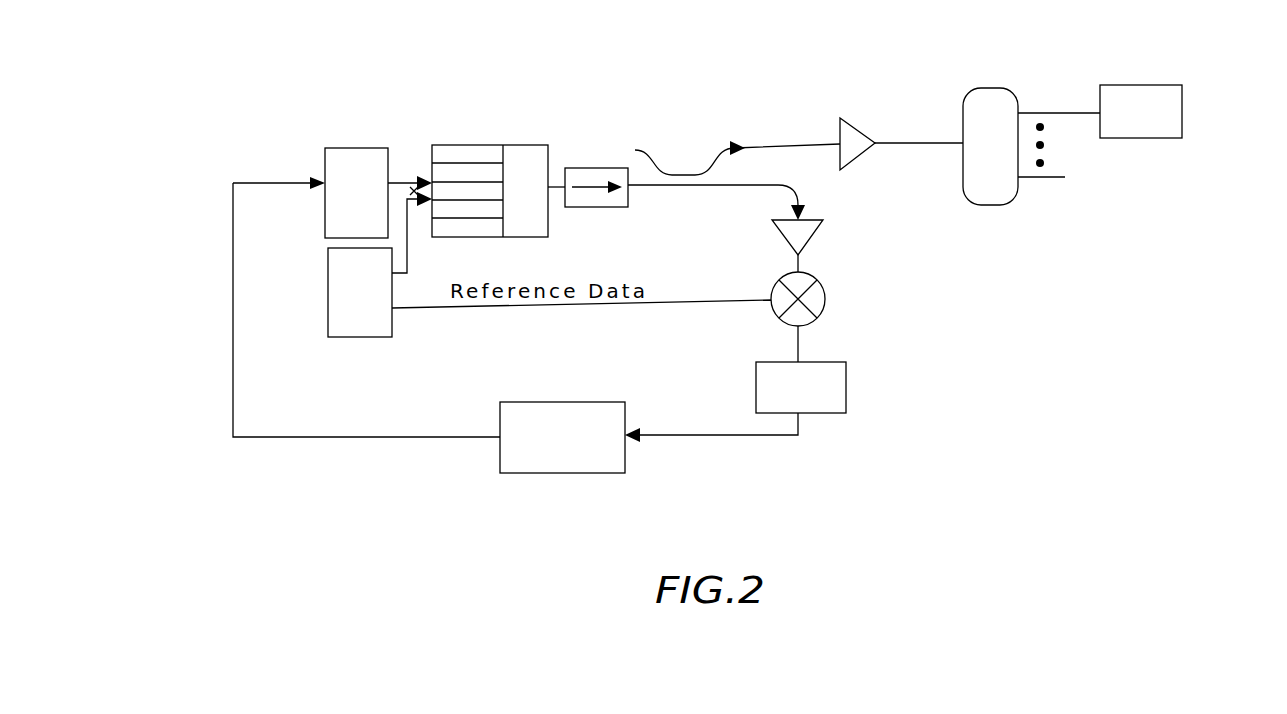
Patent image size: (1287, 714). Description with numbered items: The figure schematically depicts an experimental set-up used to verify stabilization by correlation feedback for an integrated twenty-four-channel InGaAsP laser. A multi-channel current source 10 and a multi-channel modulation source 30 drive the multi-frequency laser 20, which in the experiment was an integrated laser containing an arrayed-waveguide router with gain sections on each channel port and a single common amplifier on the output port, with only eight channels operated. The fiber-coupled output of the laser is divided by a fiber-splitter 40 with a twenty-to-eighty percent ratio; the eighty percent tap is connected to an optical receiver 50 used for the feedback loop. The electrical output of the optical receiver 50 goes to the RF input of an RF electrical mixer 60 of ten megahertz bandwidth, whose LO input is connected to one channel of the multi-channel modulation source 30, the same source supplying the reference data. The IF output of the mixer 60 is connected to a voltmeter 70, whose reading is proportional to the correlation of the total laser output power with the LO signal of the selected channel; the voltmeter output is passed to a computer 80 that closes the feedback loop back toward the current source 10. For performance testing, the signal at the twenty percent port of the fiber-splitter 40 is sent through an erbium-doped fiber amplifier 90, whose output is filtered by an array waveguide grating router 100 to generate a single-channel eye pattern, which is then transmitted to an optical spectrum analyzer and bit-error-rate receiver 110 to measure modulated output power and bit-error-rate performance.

The multi-channel current source 10 is at (321, 178).
The multi-frequency laser 20 is at (528, 143).
The multi-channel modulation source 30 is at (327, 298).
The fiber-splitter 40 is at (597, 168).
The optical receiver 50 is at (813, 230).
The RF electrical mixer 60 is at (818, 283).
The voltmeter 70 is at (846, 395).
The computer 80 is at (553, 473).
The erbium-doped fiber amplifier 90 is at (860, 156).
The array waveguide grating router 100 is at (995, 205).
The optical spectrum analyzer/bit-error-rate receiver 110 is at (1182, 112).